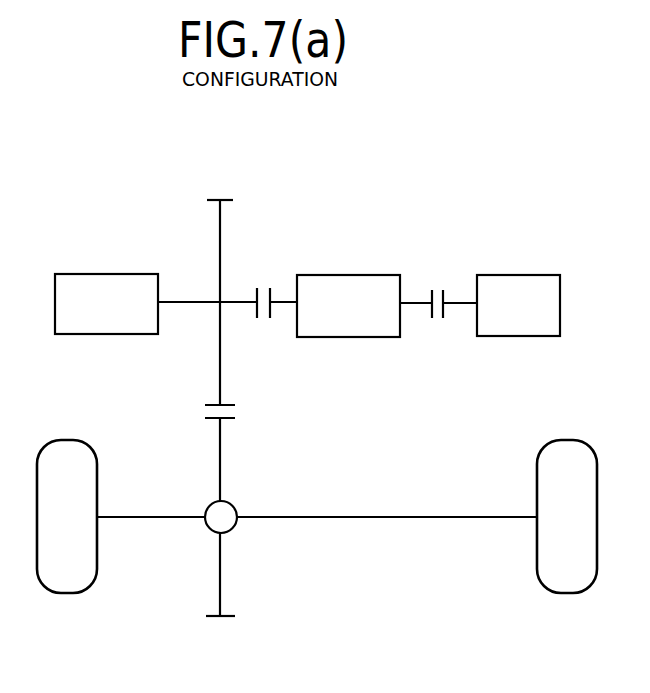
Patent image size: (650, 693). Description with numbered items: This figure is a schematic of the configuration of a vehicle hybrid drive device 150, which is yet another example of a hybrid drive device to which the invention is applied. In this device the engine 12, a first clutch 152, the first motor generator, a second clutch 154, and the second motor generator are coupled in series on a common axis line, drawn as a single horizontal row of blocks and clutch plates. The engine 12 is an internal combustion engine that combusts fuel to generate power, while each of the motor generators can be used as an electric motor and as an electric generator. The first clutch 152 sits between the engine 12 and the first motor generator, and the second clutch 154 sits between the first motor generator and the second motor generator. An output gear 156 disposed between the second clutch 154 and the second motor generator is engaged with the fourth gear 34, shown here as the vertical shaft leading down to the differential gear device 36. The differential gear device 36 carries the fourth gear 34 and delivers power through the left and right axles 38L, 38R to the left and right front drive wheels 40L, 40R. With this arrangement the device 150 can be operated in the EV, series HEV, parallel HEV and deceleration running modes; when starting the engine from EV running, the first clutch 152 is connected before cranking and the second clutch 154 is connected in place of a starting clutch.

The vehicle hybrid drive device 150 is at (110, 196).
The output gear 156 is at (233, 200).
The second clutch 154 is at (272, 268).
The first clutch 152 is at (450, 268).
The engine 12 is at (512, 327).
The differential gear device 36 is at (215, 513).
The left axle 38L is at (155, 518).
The right axle 38R is at (420, 518).
The left front drive wheel 40L is at (70, 578).
The right front drive wheel 40R is at (567, 578).
The fourth gear 34 is at (232, 617).